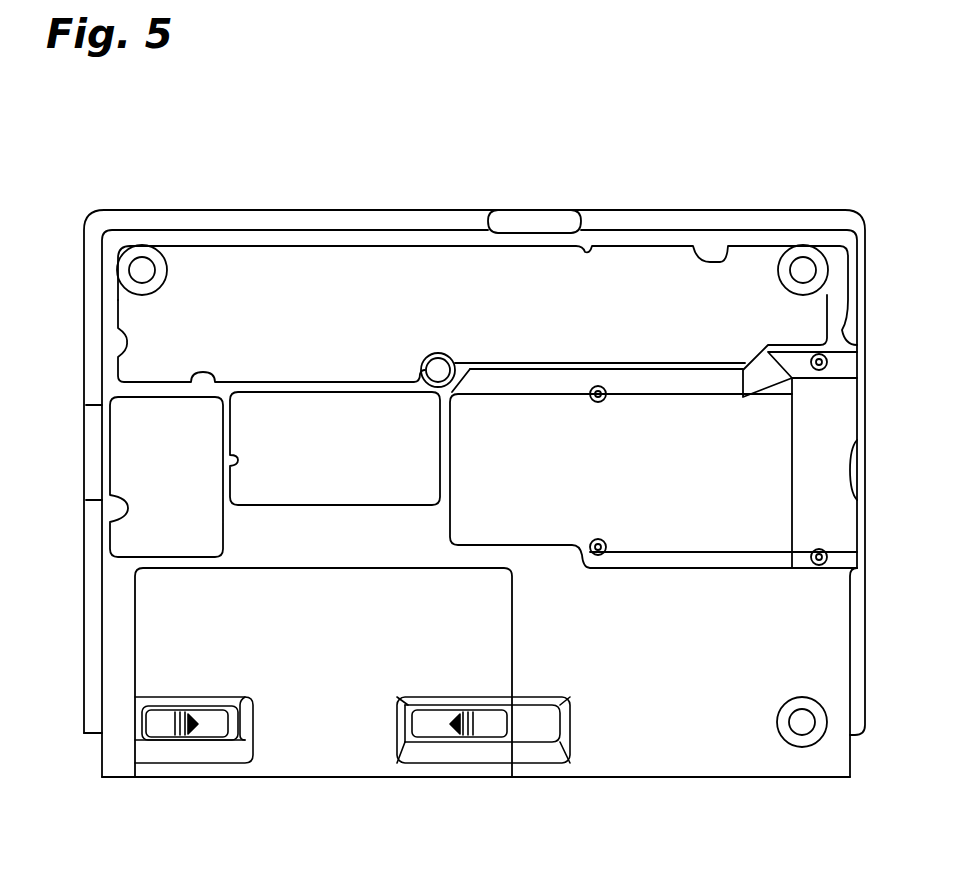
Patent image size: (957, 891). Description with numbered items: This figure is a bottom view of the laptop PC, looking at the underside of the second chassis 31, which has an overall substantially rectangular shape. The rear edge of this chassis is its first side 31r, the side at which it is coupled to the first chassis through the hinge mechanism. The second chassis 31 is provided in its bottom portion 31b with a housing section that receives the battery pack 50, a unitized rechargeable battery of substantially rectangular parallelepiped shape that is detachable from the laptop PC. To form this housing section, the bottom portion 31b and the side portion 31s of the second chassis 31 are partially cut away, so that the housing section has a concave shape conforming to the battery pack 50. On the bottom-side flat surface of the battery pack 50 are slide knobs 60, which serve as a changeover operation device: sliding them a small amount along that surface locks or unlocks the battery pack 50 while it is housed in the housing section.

The second chassis 31 is at (445, 210).
The side portion 31s is at (537, 778).
The bottom portion 31b is at (632, 755).
The first side 31r is at (770, 778).
The battery pack 50 is at (305, 776).
The slide knob 60 is at (207, 731).